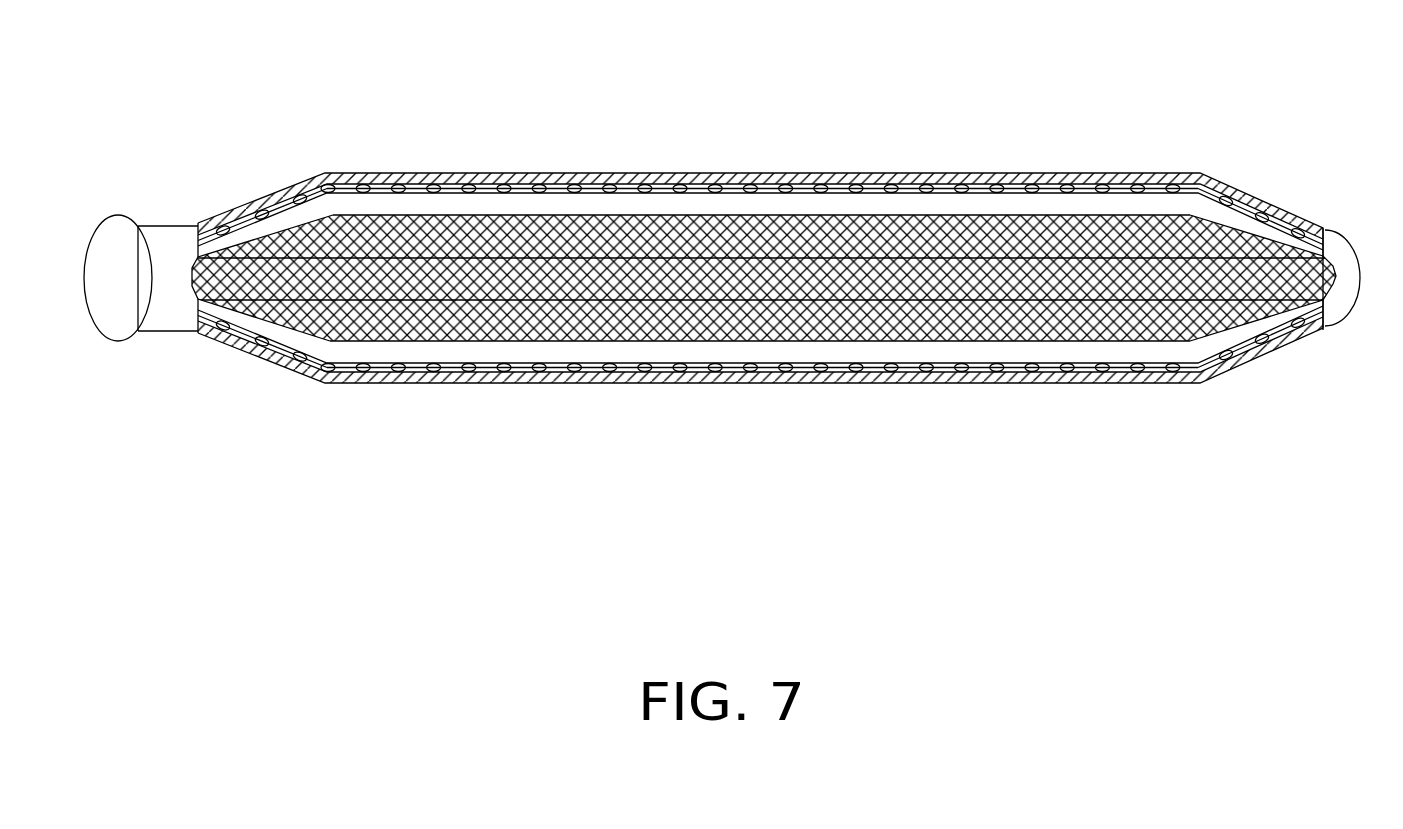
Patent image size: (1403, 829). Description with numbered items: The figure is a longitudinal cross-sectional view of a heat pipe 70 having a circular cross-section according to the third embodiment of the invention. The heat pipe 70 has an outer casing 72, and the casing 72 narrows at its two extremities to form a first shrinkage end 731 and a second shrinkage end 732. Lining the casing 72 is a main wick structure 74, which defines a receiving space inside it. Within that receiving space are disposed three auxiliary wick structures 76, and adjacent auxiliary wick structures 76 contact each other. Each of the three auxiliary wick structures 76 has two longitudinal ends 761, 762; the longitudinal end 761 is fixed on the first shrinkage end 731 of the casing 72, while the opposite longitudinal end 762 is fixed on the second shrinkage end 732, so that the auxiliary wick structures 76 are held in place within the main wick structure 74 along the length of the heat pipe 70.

The heat pipe 70 is at (692, 106).
The casing 72 is at (1072, 177).
The first shrinkage end 731 is at (285, 195).
The second shrinkage end 732 is at (1228, 192).
The main wick structure 74 is at (565, 182).
The auxiliary wick structures 76 is at (987, 323).
The longitudinal end 761 is at (233, 248).
The longitudinal end 762 is at (1280, 255).